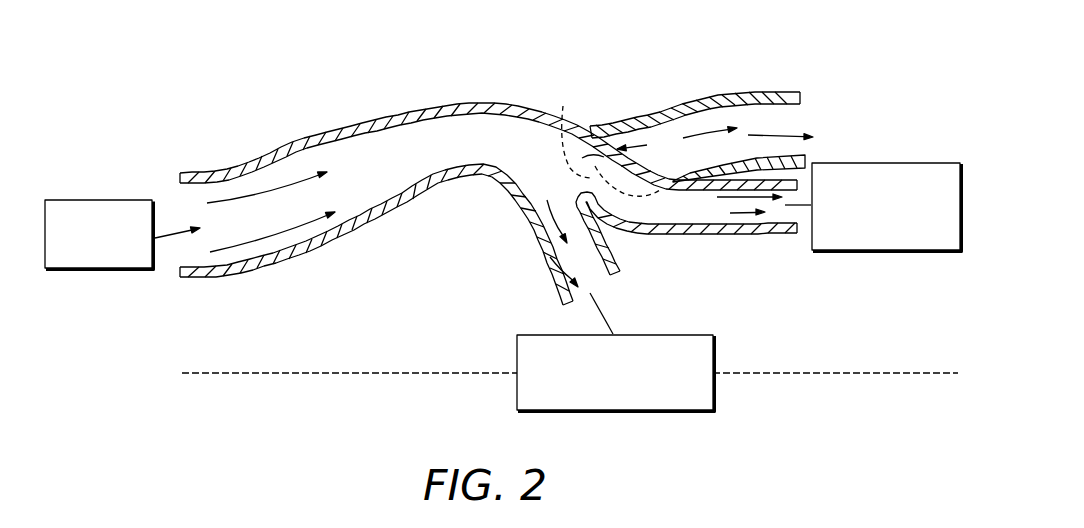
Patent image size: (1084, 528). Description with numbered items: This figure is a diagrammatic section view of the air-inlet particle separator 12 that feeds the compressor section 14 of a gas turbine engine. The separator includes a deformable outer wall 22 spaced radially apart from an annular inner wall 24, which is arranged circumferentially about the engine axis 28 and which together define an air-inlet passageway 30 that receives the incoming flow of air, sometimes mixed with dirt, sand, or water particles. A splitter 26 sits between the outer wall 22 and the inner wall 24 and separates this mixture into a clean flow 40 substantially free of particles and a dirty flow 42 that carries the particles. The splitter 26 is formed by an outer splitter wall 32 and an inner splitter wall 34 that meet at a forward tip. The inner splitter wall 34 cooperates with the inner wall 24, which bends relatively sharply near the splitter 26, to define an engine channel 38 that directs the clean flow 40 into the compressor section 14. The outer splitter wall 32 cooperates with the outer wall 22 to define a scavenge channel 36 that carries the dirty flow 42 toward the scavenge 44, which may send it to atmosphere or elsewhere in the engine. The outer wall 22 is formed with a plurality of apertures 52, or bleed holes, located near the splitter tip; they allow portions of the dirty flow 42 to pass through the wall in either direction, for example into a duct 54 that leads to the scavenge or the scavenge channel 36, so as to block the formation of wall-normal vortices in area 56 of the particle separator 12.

The air-inlet particle separator 12 is at (180, 113).
The compressor section 14 is at (517, 351).
The outer wall 22 is at (372, 121).
The inner wall 24 is at (380, 213).
The splitter 26 is at (608, 228).
The axis 28 is at (262, 375).
The air-inlet passageway 30 is at (101, 200).
The outer splitter wall 32 is at (753, 234).
The inner splitter wall 34 is at (618, 264).
The scavenge channel 36 is at (728, 214).
The engine channel 38 is at (550, 257).
The clean flow 40 is at (545, 200).
The dirty flow 42 is at (736, 198).
The scavenge 44 is at (880, 163).
The apertures 52 is at (659, 161).
The duct 54 is at (720, 95).
The area 56 is at (563, 106).